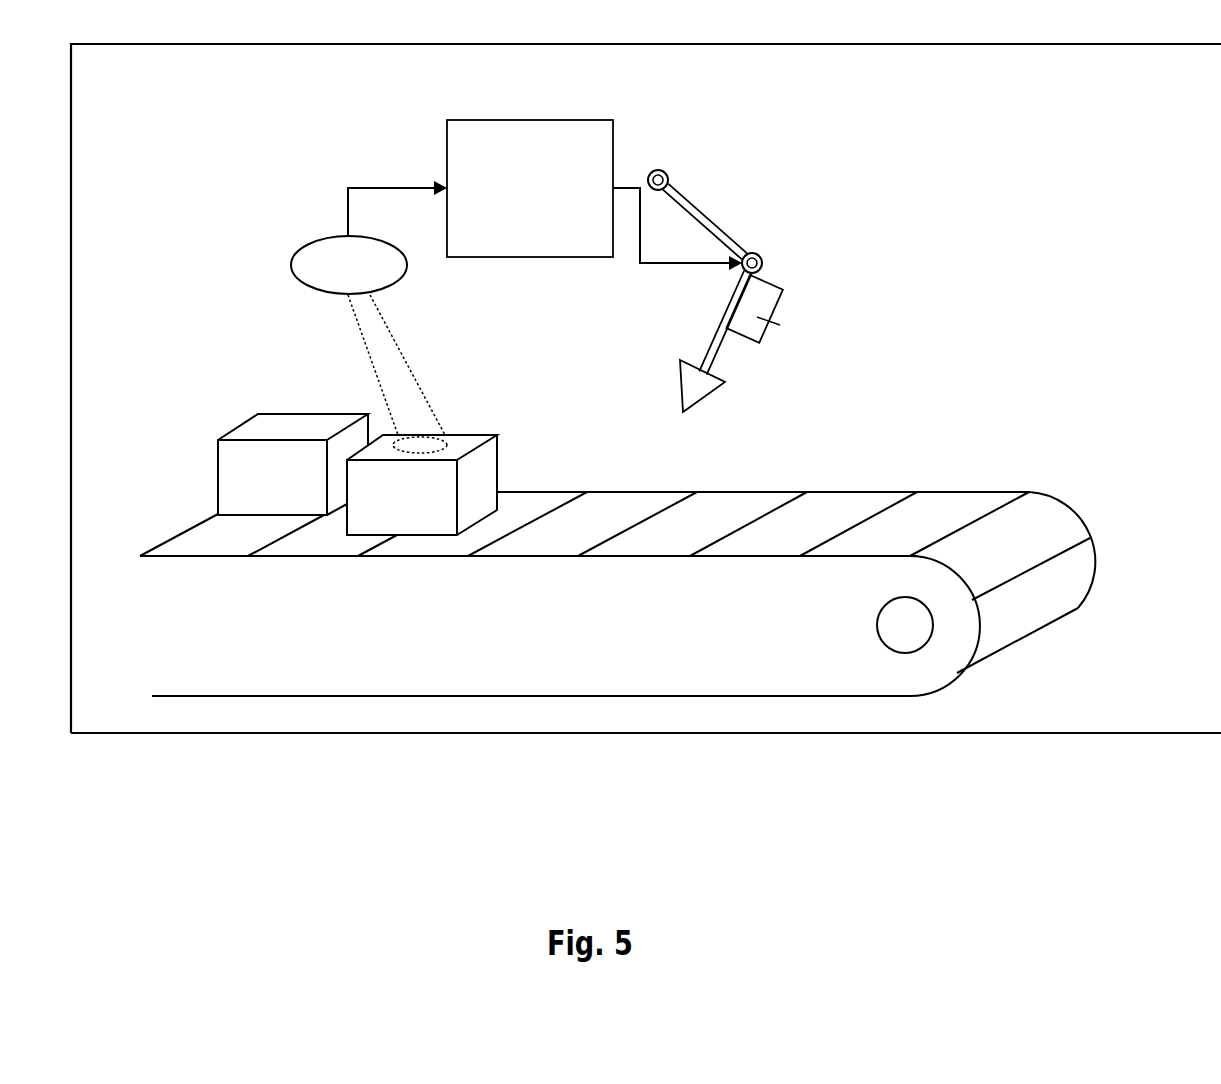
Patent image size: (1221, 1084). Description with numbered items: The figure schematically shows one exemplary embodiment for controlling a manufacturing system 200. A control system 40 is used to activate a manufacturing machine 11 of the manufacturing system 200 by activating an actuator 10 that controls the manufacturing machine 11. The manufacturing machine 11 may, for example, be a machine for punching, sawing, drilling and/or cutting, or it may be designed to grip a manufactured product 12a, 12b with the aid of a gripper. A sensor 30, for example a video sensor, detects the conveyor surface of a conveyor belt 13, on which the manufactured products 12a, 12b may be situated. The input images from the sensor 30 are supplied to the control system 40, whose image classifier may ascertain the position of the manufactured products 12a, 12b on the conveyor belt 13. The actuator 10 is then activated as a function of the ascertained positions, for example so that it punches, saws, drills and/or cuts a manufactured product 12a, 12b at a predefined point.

The manufacturing system 200 is at (560, 740).
The control system 40 is at (433, 128).
The sensor 30 is at (290, 267).
The manufacturing machine 11 is at (723, 232).
The actuator 10 is at (780, 305).
The conveyor belt 13 is at (1103, 523).
The manufactured product 12a is at (503, 465).
The manufactured product 12b is at (237, 427).